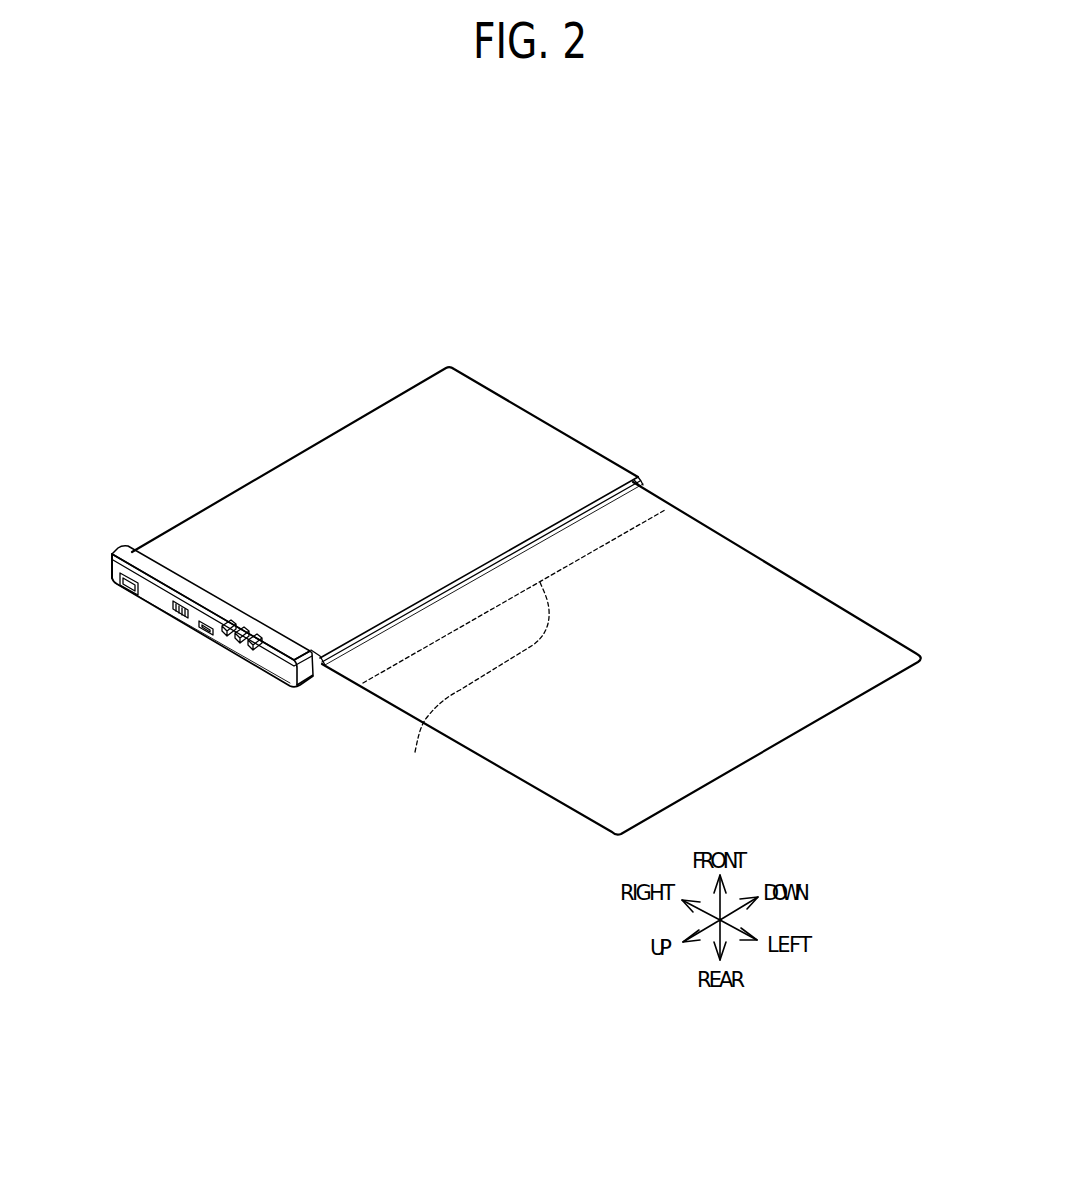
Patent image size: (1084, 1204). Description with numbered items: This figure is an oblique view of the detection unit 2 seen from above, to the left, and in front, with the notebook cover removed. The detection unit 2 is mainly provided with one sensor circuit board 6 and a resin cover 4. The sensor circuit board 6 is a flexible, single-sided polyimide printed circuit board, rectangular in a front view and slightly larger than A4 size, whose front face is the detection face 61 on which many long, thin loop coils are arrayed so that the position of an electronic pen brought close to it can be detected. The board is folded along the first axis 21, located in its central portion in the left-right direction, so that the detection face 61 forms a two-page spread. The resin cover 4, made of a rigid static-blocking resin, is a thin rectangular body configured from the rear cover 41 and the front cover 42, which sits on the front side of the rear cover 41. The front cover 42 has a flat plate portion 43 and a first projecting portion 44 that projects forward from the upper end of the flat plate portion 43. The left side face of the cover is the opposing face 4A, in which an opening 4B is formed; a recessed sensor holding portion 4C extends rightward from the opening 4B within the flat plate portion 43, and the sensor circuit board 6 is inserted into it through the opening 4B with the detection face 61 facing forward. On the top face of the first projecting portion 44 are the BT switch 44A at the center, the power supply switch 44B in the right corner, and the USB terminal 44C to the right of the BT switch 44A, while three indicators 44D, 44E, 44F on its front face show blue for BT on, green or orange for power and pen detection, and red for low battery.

The detection unit 2 is at (660, 315).
The resin cover 4 is at (345, 493).
The flat plate portion 43 is at (438, 456).
The opposing face 4A is at (320, 668).
The opening 4B is at (590, 513).
The sensor holding portion 4C is at (637, 489).
The first projecting portion 44 is at (202, 602).
The rear cover 41 is at (142, 600).
The front cover 42 is at (280, 668).
The BT switch 44A is at (198, 633).
The power supply switch 44B is at (119, 584).
The USB terminal 44C is at (171, 621).
The indicator 44D is at (252, 655).
The indicator 44E is at (239, 646).
The indicator 44F is at (226, 640).
The sensor circuit board 6 is at (752, 575).
The detection face 61 is at (677, 662).
The first axis 21 is at (514, 645).